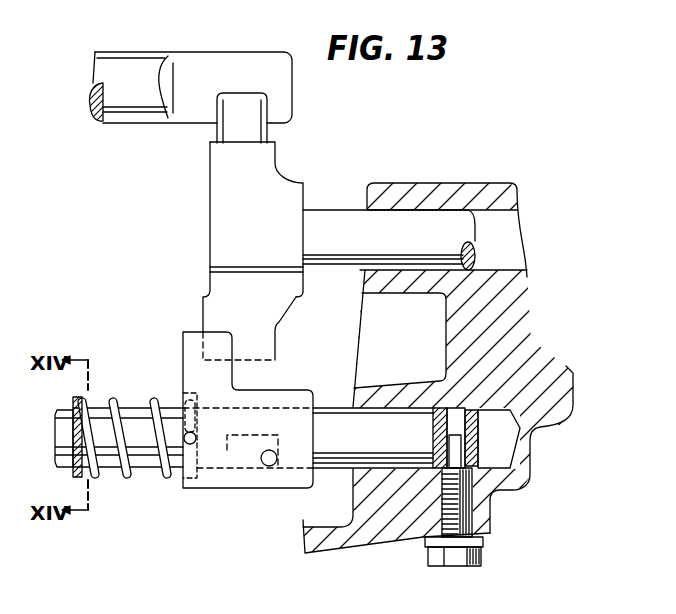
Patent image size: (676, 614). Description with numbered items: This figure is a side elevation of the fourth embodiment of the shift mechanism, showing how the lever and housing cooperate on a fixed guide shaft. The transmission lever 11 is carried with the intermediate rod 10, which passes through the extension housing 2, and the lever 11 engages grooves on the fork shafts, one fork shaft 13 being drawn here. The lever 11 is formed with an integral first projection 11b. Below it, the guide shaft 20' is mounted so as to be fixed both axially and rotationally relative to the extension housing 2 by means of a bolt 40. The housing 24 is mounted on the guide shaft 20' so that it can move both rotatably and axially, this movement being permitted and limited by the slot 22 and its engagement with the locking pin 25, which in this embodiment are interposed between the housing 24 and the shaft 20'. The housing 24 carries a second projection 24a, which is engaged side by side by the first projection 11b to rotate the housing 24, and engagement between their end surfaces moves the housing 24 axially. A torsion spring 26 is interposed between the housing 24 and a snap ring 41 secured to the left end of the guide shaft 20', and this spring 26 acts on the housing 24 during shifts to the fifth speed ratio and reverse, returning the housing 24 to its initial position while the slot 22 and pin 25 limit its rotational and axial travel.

The extension housing 2 is at (357, 538).
The intermediate rod 10 is at (329, 212).
The transmission lever 11 is at (210, 236).
The projection 11b is at (274, 342).
The fork shaft 13 is at (201, 57).
The guide shaft 20' is at (244, 417).
The slot 22 is at (245, 456).
The housing 24 is at (182, 358).
The second projection 24a is at (184, 330).
The locking pin 25 is at (269, 466).
The torsion spring 26 is at (118, 403).
The bolt 40 is at (456, 566).
The snap ring 41 is at (73, 400).